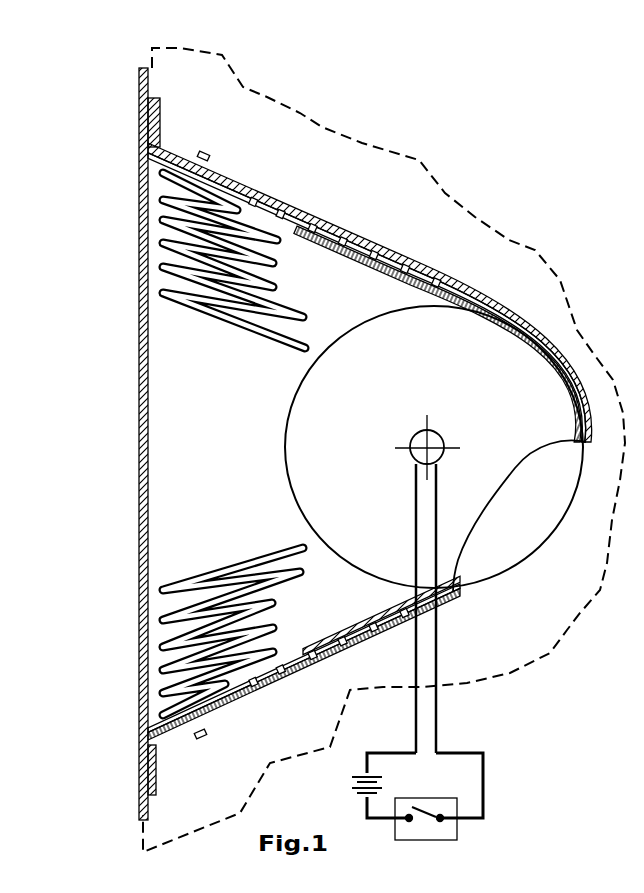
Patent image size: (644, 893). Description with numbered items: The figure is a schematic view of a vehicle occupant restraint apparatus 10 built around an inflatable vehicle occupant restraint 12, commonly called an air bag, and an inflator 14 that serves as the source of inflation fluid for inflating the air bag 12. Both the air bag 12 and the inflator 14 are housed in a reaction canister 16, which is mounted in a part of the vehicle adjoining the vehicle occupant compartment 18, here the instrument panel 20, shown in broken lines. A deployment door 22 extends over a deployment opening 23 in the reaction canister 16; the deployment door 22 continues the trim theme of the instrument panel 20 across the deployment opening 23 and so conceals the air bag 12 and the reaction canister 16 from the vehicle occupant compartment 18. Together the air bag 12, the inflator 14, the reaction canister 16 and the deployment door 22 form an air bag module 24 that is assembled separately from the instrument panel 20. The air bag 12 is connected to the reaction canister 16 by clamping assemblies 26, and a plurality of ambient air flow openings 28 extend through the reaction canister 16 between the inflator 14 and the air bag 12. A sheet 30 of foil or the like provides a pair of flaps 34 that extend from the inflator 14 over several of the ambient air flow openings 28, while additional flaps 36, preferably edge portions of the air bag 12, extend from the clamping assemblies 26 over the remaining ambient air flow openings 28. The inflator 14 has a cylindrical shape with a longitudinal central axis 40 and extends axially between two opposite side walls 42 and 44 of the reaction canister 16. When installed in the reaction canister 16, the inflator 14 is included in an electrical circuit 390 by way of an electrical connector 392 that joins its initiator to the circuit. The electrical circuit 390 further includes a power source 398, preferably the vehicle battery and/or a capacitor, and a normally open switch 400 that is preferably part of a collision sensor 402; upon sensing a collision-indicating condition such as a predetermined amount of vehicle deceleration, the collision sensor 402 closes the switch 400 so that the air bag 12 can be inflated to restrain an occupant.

The vehicle occupant restraint apparatus 10 is at (118, 113).
The inflatable vehicle occupant restraint 12 is at (152, 212).
The inflator 14 is at (282, 427).
The reaction canister 16 is at (478, 286).
The vehicle occupant compartment 18 is at (87, 372).
The instrument panel 20 is at (150, 57).
The deployment door 22 is at (152, 138).
The deployment opening 23 is at (136, 328).
The air bag module 24 is at (410, 230).
The clamping assemblies 26 is at (198, 152).
The ambient air flow openings 28 is at (357, 228).
The sheet 30 is at (385, 282).
The flaps 34 is at (307, 244).
The additional flaps 36 is at (256, 190).
The longitudinal central axis 40 is at (430, 450).
The side wall 42 is at (167, 492).
The side wall 44 is at (522, 497).
The electrical circuit 390 is at (466, 732).
The electrical connector 392 is at (410, 435).
The power source 398 is at (357, 777).
The normally open switch 400 is at (427, 806).
The collision sensor 402 is at (430, 843).